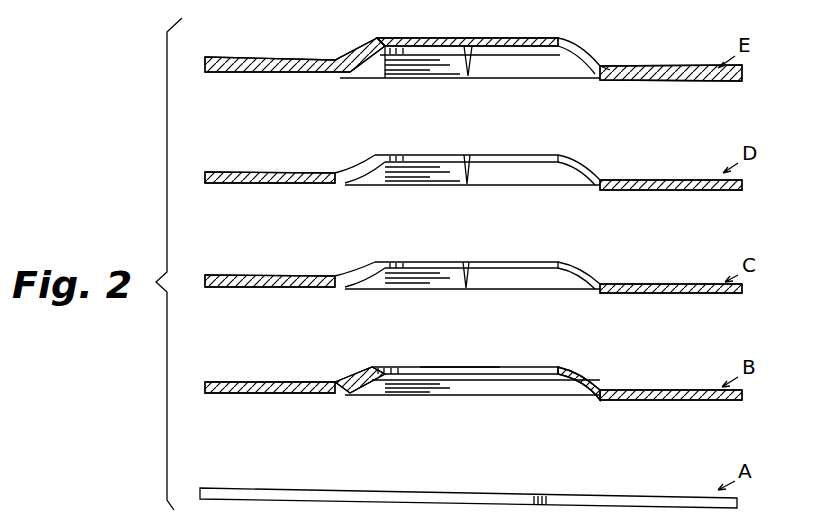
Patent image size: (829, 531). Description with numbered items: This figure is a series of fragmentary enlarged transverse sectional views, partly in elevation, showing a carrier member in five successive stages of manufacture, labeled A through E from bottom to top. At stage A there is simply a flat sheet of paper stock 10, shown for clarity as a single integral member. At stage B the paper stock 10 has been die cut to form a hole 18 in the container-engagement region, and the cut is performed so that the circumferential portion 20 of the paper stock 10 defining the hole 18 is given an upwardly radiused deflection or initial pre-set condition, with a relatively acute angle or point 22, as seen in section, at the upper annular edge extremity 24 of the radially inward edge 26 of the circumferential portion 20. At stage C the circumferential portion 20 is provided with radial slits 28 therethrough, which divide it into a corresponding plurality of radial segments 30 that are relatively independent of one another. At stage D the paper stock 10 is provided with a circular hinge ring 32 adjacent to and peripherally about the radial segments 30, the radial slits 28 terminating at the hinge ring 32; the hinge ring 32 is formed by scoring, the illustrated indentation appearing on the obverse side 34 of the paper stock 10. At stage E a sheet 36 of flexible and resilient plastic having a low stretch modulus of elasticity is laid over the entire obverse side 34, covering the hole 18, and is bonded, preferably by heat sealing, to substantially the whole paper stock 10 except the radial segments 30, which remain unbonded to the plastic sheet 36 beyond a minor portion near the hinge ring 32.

The sheet of paper stock 10 is at (248, 374).
The holes 18 is at (493, 153).
The circumferential portion 20 is at (582, 267).
The acute angle or point 22 is at (372, 367).
The upper annular edge extremity 24 is at (448, 352).
The radially inward edge 26 is at (384, 367).
The radial slits 28 is at (466, 262).
The radial segments 30 is at (418, 254).
The circular hinge ring 32 is at (338, 172).
The obverse side 34 is at (283, 172).
The sheet of flexible and resilient plastic 36 is at (305, 57).